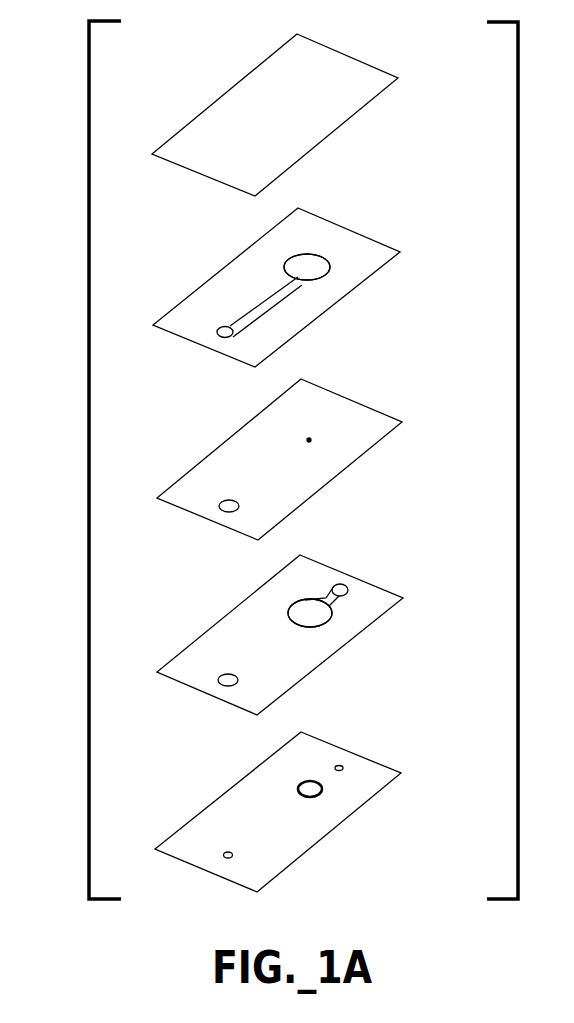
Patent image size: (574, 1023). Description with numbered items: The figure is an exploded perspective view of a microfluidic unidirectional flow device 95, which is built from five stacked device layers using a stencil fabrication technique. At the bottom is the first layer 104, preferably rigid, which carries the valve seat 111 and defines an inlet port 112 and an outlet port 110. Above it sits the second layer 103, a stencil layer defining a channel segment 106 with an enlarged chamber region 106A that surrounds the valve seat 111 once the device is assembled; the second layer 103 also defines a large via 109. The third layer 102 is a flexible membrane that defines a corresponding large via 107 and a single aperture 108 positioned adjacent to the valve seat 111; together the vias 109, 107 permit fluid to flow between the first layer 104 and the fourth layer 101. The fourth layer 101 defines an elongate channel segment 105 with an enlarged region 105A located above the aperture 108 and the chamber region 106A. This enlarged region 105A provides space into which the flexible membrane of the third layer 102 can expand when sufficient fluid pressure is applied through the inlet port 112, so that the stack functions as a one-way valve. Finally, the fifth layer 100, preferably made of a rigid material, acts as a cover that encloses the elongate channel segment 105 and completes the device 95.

The microfluidic unidirectional flow device 95 is at (80, 462).
The fifth layer 100 is at (399, 79).
The fourth layer 101 is at (401, 253).
The third layer 102 is at (403, 423).
The second layer 103 is at (404, 599).
The first layer 104 is at (402, 774).
The elongate channel segment 105 is at (260, 298).
The enlarged region 105A is at (318, 254).
The channel segment 106 is at (343, 584).
The enlarged chamber region 106A is at (303, 600).
The large via 107 is at (223, 501).
The aperture 108 is at (309, 440).
The large via 109 is at (225, 674).
The outlet port 110 is at (227, 852).
The valve seat 111 is at (302, 782).
The inlet port 112 is at (342, 765).